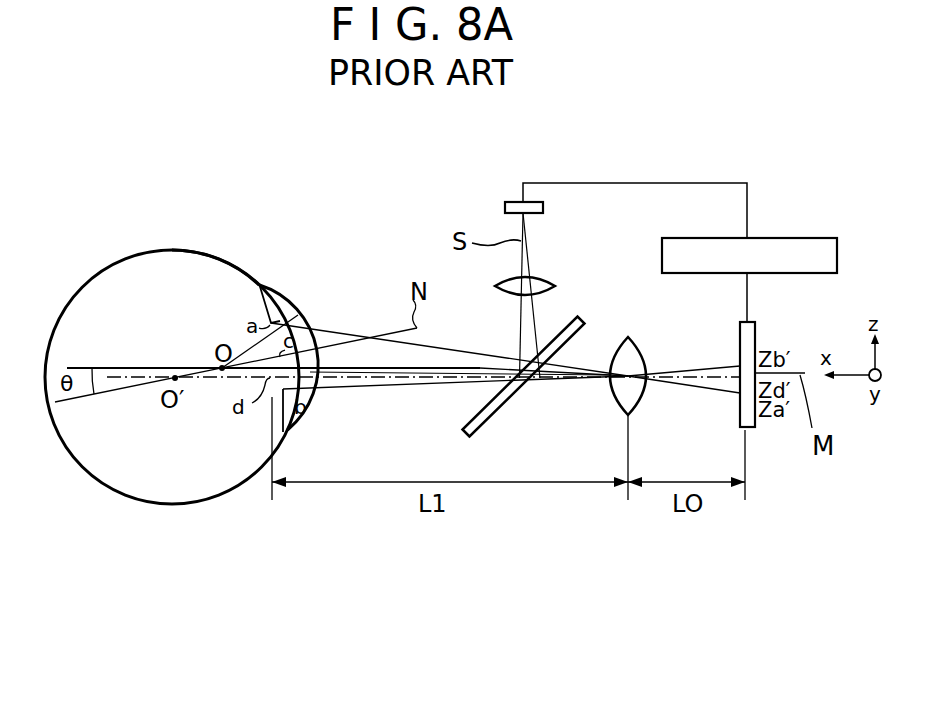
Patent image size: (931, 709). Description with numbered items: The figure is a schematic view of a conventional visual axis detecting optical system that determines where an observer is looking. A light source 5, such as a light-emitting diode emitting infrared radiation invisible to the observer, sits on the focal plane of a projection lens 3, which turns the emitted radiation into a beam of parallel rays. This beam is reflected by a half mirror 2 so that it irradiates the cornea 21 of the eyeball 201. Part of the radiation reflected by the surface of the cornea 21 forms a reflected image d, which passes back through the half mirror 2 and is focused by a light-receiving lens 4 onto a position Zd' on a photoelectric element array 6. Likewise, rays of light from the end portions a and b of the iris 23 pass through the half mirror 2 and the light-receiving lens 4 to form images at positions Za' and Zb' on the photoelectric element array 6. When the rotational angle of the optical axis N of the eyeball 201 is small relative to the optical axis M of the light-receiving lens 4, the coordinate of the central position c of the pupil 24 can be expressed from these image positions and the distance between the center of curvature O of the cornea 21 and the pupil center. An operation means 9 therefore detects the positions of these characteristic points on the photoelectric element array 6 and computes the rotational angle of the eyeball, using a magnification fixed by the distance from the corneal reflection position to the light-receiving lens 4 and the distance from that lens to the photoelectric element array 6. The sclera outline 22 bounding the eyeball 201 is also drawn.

The eyeball 201 is at (143, 246).
The sclera (eyeball) 22 is at (212, 256).
The cornea 21 is at (298, 305).
The iris 23 is at (260, 304).
The pupil 24 is at (298, 315).
The half mirror 2 is at (463, 433).
The projection lens 3 is at (556, 286).
The light-receiving lens 4 is at (633, 336).
The light source 5 is at (545, 210).
The photoelectric element array 6 is at (752, 322).
The operation means 9 is at (792, 238).